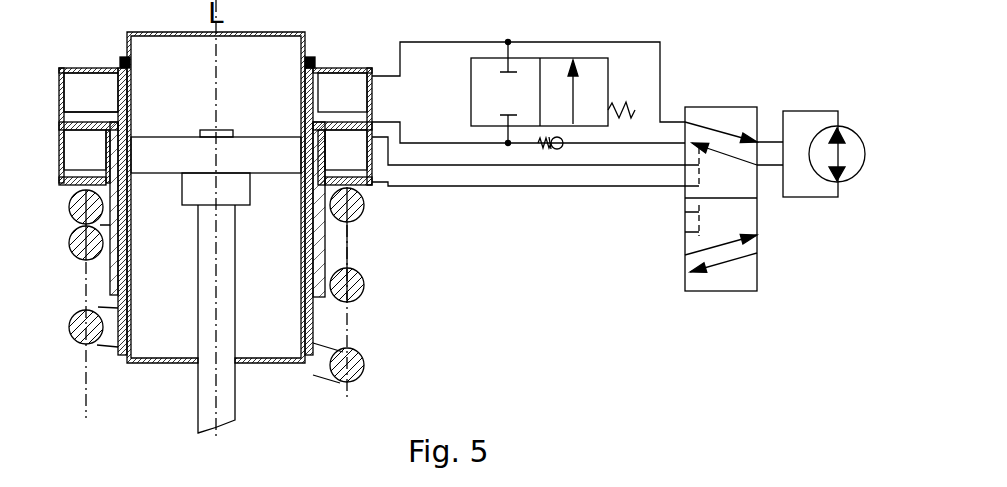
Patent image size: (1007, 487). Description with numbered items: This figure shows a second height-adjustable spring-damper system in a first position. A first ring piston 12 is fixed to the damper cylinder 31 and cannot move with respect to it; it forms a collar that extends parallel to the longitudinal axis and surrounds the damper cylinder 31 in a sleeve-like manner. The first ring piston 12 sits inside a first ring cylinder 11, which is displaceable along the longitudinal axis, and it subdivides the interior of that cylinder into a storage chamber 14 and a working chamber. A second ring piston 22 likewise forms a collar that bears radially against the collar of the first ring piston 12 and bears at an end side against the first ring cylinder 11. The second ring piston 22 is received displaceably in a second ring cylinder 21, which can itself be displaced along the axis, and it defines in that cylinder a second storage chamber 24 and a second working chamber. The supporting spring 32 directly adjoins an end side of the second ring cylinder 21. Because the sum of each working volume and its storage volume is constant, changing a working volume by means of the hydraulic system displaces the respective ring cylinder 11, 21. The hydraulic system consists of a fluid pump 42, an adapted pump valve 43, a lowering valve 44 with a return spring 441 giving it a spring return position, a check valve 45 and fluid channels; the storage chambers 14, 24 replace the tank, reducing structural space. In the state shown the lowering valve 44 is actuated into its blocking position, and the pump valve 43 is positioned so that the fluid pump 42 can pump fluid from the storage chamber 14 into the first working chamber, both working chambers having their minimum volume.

The first ring cylinder 11 is at (62, 78).
The first ring piston 12 is at (97, 115).
The storage chamber 14 is at (345, 83).
The second ring cylinder 21 is at (368, 188).
The second ring piston 22 is at (62, 180).
The second storage chamber 24 is at (362, 153).
The damper cylinder 31 is at (157, 348).
The supporting spring 32 is at (77, 337).
The fluid pump 42 is at (822, 177).
The pump valve 43 is at (752, 278).
The lowering valve 44 is at (560, 62).
The return spring 441 is at (628, 80).
The check valve 45 is at (574, 175).